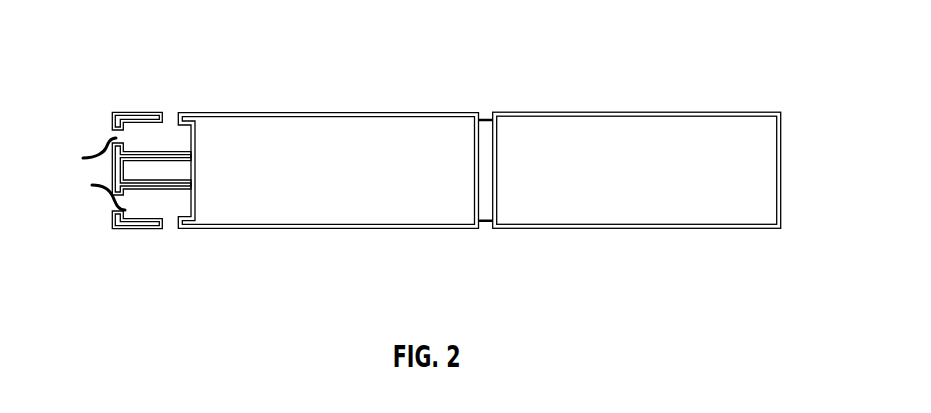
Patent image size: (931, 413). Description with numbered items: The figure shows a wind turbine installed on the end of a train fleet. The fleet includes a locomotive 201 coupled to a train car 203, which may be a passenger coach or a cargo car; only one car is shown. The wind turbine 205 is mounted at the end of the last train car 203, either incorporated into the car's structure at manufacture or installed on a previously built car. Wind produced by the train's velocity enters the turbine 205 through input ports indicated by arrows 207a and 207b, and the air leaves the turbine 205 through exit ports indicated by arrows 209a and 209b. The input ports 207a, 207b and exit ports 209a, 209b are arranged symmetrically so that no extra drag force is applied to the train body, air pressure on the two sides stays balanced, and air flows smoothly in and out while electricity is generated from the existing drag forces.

The locomotive 201 is at (642, 125).
The train car 203 is at (284, 125).
The wind turbine 205 is at (112, 163).
The input port 207a is at (170, 92).
The input port 207b is at (170, 251).
The exit port 209a is at (95, 140).
The exit port 209b is at (81, 208).